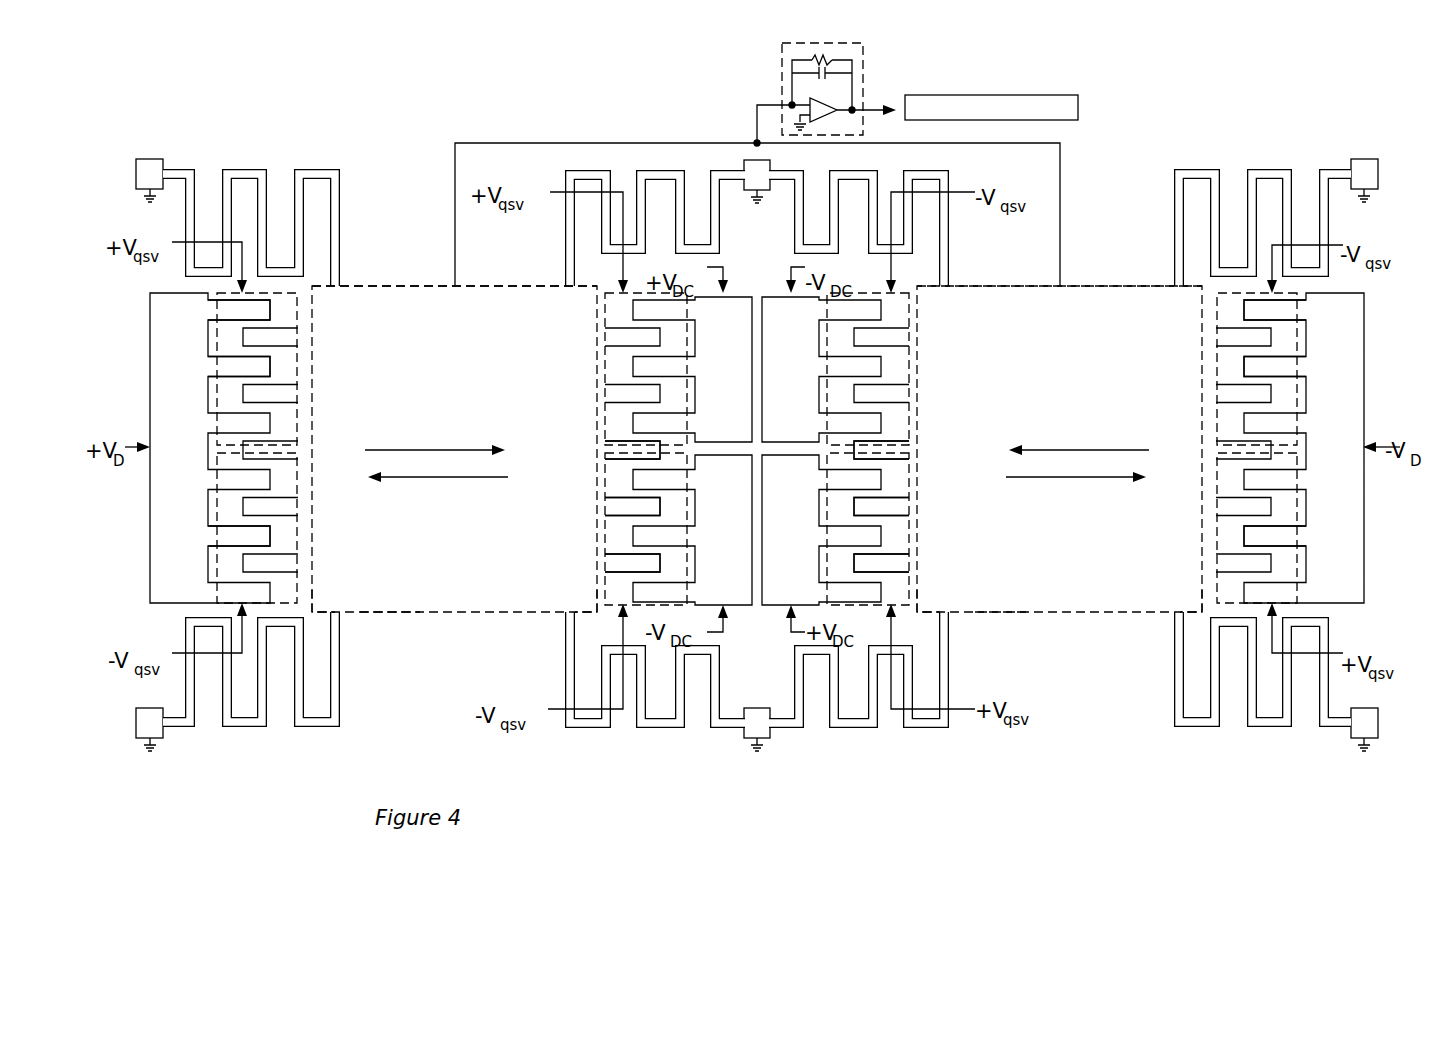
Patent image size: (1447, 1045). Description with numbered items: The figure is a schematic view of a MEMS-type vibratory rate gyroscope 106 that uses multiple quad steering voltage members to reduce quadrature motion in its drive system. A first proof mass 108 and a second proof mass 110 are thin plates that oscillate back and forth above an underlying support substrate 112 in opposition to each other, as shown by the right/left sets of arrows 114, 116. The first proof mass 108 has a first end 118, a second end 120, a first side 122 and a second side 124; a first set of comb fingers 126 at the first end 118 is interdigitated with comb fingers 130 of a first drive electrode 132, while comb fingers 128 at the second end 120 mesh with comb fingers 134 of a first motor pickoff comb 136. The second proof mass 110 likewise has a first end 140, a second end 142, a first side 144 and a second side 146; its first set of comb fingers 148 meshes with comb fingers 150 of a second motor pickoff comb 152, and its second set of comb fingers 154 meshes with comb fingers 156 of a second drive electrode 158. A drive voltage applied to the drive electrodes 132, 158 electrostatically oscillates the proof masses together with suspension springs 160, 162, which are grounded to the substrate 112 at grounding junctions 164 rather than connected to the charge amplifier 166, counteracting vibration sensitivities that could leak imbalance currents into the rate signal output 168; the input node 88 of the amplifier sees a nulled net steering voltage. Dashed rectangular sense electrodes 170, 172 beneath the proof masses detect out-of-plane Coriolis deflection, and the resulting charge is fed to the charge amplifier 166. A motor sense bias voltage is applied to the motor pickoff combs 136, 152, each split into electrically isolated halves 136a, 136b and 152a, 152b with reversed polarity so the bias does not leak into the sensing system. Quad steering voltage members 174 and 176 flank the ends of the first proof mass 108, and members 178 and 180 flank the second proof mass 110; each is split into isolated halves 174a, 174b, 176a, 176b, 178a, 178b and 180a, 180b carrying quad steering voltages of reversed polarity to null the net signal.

The input node 88 is at (790, 104).
The MEMS-type gyroscope 106 is at (650, 83).
The first proof mass 108 is at (455, 613).
The second proof mass 110 is at (1070, 613).
The support substrate 112 is at (432, 697).
The right/left set of arrows 114 is at (440, 452).
The right/left set of arrows 116 is at (1085, 452).
The first end 118 is at (315, 611).
The second end 120 is at (598, 605).
The first side 122 is at (500, 287).
The second side 124 is at (385, 613).
The first set of comb fingers 126 is at (283, 380).
The comb fingers 128 is at (612, 385).
The comb fingers 130 is at (232, 464).
The first drive electrode 132 is at (165, 604).
The comb fingers 134 is at (662, 408).
The first motor pickoff comb 136 is at (721, 322).
The upper split motor pickoff comb 136a is at (693, 369).
The lower split motor pickoff comb 136b is at (693, 530).
The first end 140 is at (917, 605).
The second end 142 is at (1200, 605).
The first side 144 is at (995, 288).
The second side 146 is at (995, 613).
The first set of comb fingers 148 is at (897, 385).
The comb fingers 150 is at (853, 410).
The second motor pickoff comb 152 is at (785, 578).
The split motor pickoff comb 152a is at (821, 369).
The split motor pickoff comb 152b is at (821, 530).
The second set of comb fingers 154 is at (1227, 385).
The comb fingers 156 is at (1280, 472).
The second drive electrode 158 is at (1340, 604).
The suspension springs 160 is at (245, 168).
The suspension springs 162 is at (925, 170).
The grounding junctions 164 is at (150, 158).
The charge amplifier 166 is at (865, 70).
The rate signal output 168 is at (1078, 95).
The sense electrode 170 is at (375, 290).
The sense electrode 172 is at (1090, 290).
The first quad steering voltage member 174 is at (210, 397).
The upper-left quad steering voltage member 174a is at (225, 340).
The split quad steering voltage member 174b is at (225, 555).
The second quad steering voltage member 176 is at (600, 532).
The upper-right quad steering voltage member 176a is at (608, 425).
The split quad steering voltage member 176b is at (608, 475).
The quad steering voltage member 178 is at (914, 532).
The split quad steering voltage member 178a is at (906, 425).
The split quad steering voltage member 178b is at (906, 475).
The quad steering voltage member 180 is at (1300, 397).
The split quad steering voltage member 180a is at (1280, 340).
The split quad steering voltage member 180b is at (1280, 555).